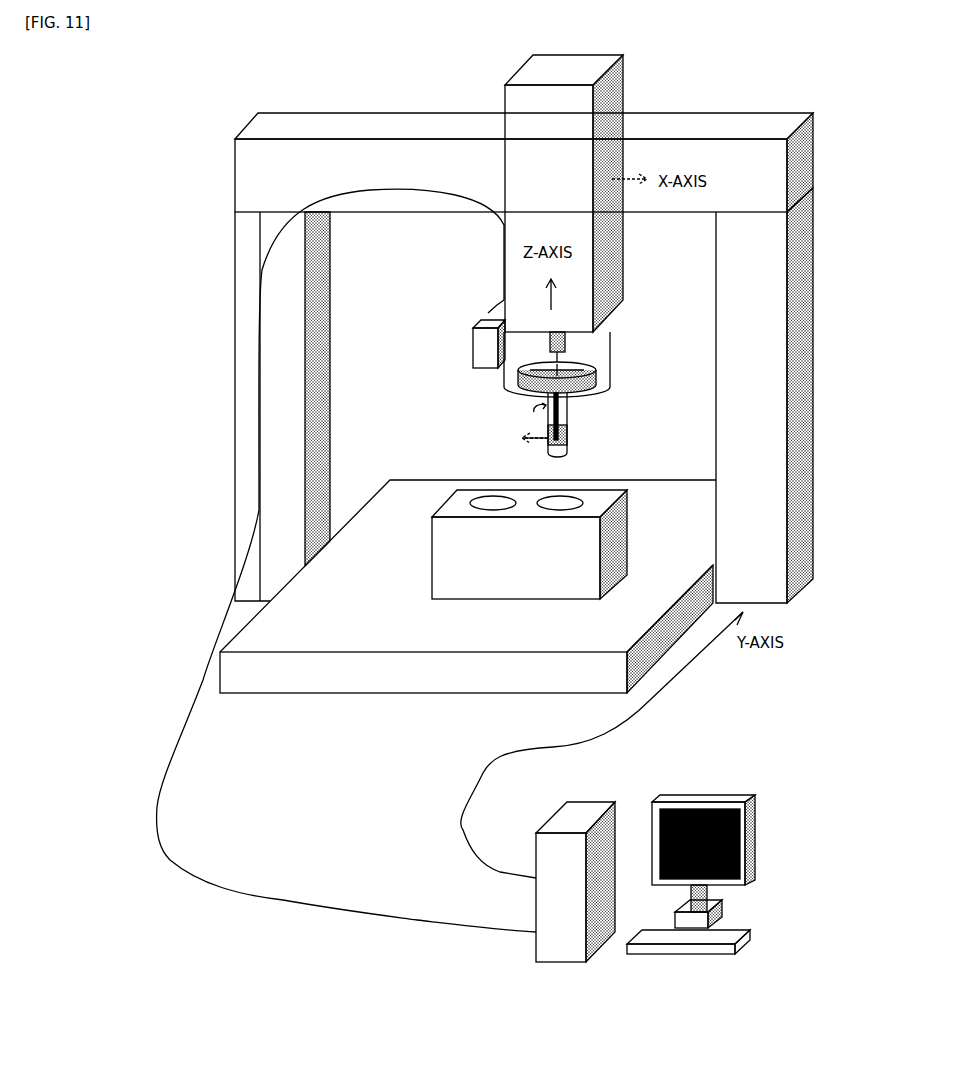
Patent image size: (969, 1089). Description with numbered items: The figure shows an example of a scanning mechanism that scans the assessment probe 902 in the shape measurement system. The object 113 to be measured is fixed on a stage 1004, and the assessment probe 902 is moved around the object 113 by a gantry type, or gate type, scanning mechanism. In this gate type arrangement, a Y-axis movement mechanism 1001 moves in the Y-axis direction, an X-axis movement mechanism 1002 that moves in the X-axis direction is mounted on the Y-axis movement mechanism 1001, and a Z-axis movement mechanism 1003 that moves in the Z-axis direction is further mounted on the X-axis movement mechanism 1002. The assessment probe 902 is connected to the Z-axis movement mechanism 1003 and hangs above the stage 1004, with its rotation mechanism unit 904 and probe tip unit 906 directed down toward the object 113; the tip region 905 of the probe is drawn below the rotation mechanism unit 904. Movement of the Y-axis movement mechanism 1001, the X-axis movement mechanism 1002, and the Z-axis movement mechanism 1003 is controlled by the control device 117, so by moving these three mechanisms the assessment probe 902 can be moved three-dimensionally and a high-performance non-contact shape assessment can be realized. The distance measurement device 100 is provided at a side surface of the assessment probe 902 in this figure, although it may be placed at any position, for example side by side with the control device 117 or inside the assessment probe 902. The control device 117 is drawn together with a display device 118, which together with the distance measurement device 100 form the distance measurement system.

The Z-axis movement mechanism 1003 is at (518, 98).
The X-axis movement mechanism 1002 is at (680, 128).
The Y-axis movement mechanism 1001 is at (770, 500).
The stage 1004 is at (400, 680).
The object 113 is at (447, 538).
The distance measurement device 100 is at (473, 345).
The assessment probe 902 is at (610, 330).
The rotation mechanism unit 904 is at (517, 385).
The probe 905 is at (567, 425).
The probe tip unit 906 is at (545, 445).
The control device 117 is at (567, 823).
The display device 118 is at (695, 800).